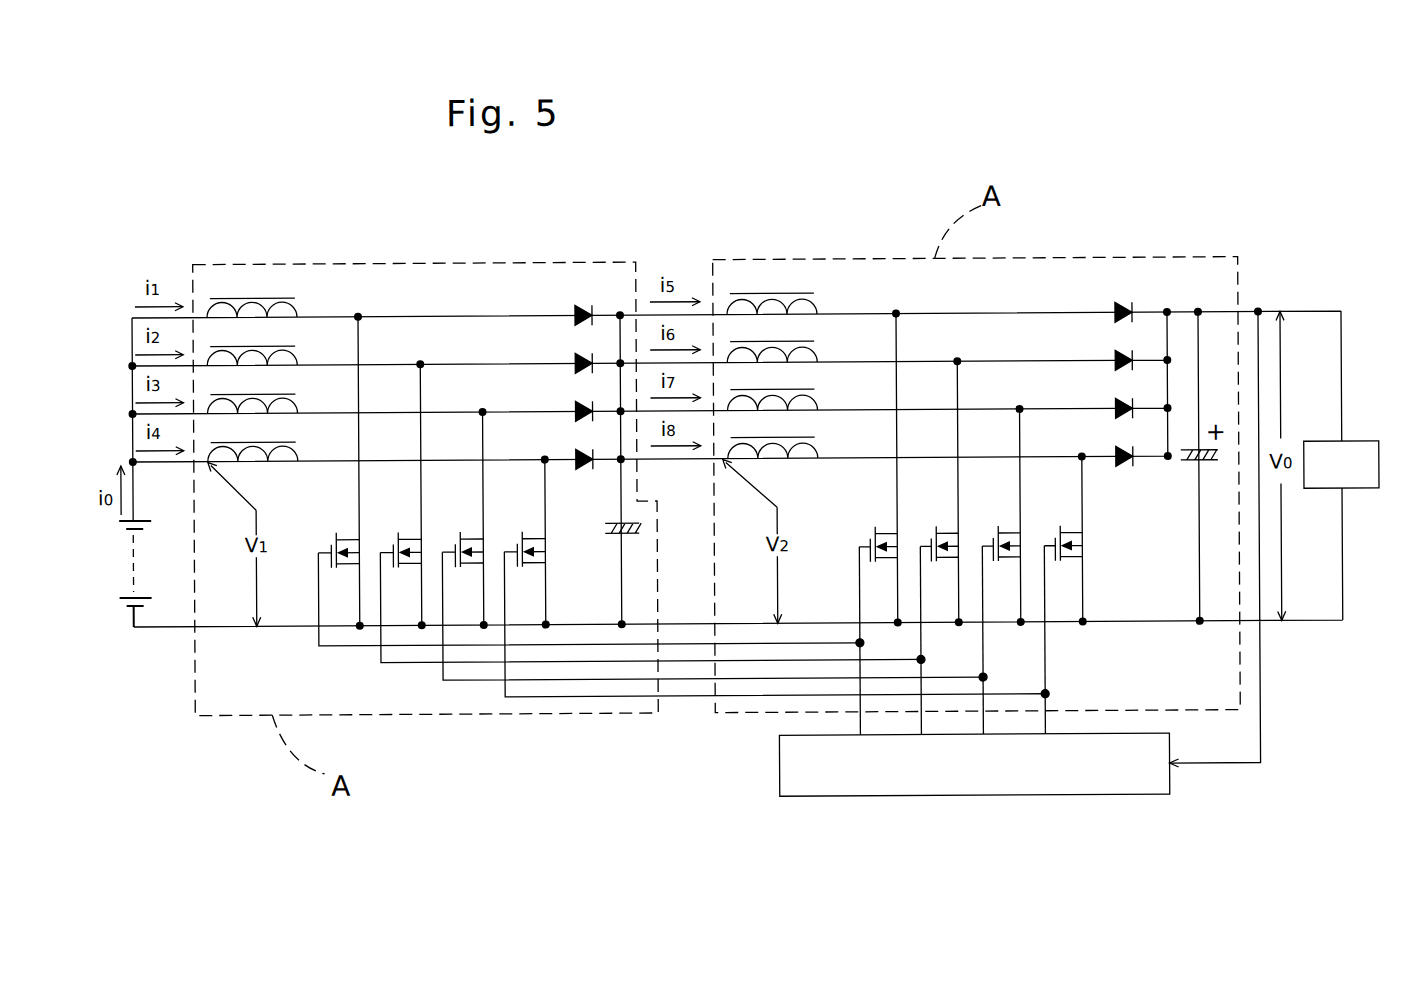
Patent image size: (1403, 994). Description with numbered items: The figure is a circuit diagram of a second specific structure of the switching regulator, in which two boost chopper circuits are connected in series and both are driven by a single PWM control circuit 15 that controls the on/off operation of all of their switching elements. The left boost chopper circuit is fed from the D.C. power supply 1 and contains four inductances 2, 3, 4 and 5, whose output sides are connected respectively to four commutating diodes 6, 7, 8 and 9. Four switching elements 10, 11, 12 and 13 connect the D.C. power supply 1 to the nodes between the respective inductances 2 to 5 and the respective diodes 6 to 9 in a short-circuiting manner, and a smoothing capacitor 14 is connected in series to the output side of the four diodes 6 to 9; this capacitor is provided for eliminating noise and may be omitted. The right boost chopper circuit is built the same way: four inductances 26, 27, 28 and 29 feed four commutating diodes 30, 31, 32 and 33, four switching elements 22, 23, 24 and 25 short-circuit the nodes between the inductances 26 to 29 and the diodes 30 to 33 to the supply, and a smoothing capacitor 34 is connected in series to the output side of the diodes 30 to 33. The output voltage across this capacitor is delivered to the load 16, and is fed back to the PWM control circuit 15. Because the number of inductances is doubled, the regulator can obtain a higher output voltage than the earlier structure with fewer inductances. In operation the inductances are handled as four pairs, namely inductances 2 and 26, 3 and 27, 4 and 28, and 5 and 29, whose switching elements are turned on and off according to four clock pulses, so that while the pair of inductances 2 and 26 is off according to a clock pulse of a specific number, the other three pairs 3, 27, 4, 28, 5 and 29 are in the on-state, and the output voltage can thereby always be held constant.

The D.C. power supply 1 is at (148, 550).
The inductance 2 is at (299, 309).
The inductance 3 is at (299, 357).
The inductance 4 is at (299, 405).
The inductance 5 is at (299, 453).
The commutating diode 6 is at (572, 312).
The commutating diode 7 is at (572, 360).
The commutating diode 8 is at (572, 408).
The commutating diode 9 is at (572, 456).
The switching element 10 is at (331, 548).
The switching element 11 is at (393, 546).
The switching element 12 is at (455, 546).
The switching element 13 is at (517, 546).
The smoothing capacitor 14 is at (617, 537).
The PWM control circuit 15 is at (1140, 801).
The load 16 is at (1366, 452).
The switching element 22 is at (870, 544).
The switching element 23 is at (931, 543).
The switching element 24 is at (993, 543).
The switching element 25 is at (1055, 543).
The inductance 26 is at (819, 307).
The inductance 27 is at (819, 355).
The inductance 28 is at (819, 403).
The inductance 29 is at (819, 451).
The commutating diode 30 is at (1113, 312).
The commutating diode 31 is at (1113, 360).
The commutating diode 32 is at (1113, 408).
The commutating diode 33 is at (1113, 456).
The smoothing capacitor 34 is at (1192, 470).